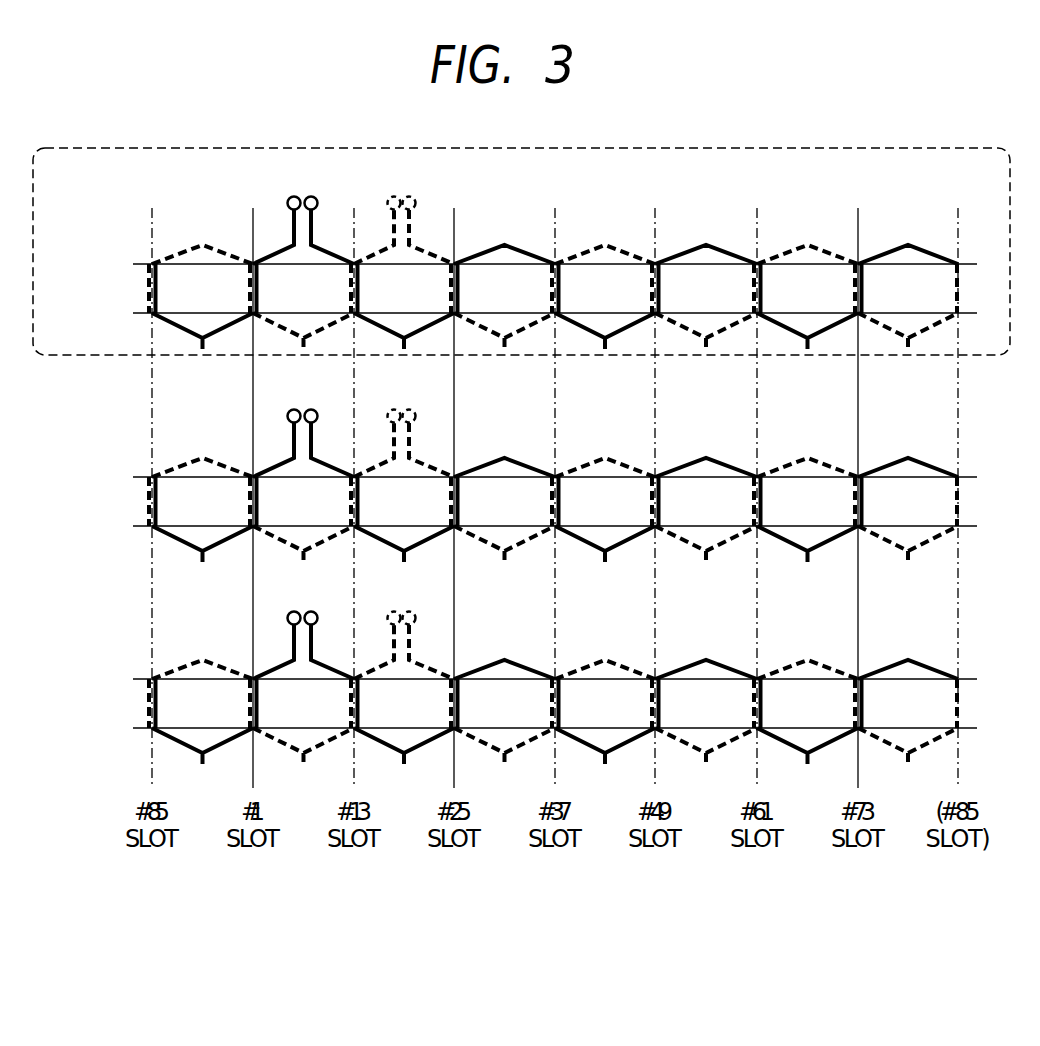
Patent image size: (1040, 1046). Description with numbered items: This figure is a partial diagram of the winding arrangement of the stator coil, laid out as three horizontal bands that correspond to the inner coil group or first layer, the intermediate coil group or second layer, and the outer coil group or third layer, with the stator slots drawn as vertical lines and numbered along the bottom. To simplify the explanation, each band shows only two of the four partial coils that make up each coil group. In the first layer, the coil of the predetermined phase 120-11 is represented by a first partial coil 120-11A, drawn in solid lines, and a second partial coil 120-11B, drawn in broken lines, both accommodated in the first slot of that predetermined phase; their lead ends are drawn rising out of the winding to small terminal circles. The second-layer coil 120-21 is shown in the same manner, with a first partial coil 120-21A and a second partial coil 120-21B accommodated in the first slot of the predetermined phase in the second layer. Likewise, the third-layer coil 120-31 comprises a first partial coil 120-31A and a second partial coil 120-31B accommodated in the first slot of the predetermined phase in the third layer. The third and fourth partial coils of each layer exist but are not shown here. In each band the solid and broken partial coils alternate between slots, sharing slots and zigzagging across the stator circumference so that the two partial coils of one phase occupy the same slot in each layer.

The first layer winding 120-11 is at (521, 251).
The first partial coil 120-11A is at (287, 228).
The second partial coil 120-11B is at (387, 228).
The second layer winding 120-21 is at (522, 470).
The first partial coil 120-21A is at (555, 470).
The second partial coil 120-21B is at (553, 470).
The third layer winding 120-31 is at (534, 672).
The first partial coil 120-31A is at (555, 672).
The second partial coil 120-31B is at (553, 672).